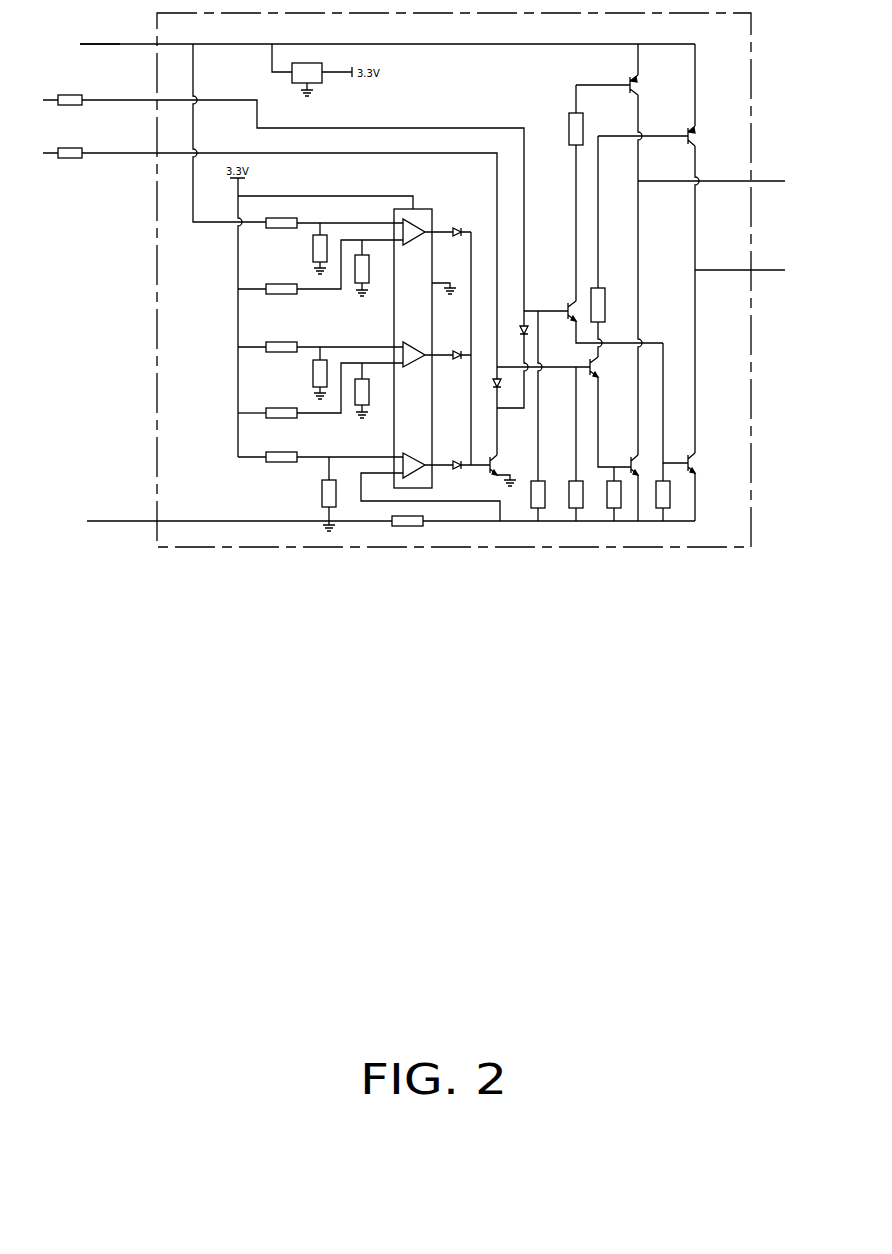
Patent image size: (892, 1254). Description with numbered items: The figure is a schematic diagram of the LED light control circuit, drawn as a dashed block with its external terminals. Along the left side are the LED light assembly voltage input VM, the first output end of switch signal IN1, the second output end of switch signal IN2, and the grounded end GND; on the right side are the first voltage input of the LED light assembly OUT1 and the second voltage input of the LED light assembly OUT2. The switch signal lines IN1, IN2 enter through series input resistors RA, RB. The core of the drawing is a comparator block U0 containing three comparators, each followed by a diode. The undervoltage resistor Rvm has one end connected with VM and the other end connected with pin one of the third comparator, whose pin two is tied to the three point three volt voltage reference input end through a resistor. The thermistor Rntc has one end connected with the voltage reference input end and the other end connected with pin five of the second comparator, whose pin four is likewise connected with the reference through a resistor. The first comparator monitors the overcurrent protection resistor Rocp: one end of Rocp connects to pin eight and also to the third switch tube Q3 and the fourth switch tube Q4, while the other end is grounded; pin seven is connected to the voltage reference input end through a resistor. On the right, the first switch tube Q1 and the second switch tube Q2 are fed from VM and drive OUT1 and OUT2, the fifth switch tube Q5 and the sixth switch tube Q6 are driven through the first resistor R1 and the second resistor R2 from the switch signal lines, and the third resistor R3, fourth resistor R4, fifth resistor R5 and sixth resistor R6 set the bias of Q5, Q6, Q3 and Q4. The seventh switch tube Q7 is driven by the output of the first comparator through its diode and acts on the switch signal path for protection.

The LED light assembly voltage input VM is at (111, 28).
The first output end of switch signal IN1 is at (285, 230).
The second output end of switch signal IN2 is at (272, 276).
The grounded end GND is at (391, 500).
The first voltage input of the LED light assembly OUT1 is at (732, 162).
The second voltage input of the LED light assembly OUT2 is at (761, 252).
The input resistor A RA is at (70, 94).
The input resistor B RB is at (70, 147).
The undervoltage resistor Rvm is at (330, 217).
The thermistor Rntc is at (267, 407).
The overcurrent protection resistor Rocp is at (407, 529).
The first resistor R1 is at (599, 193).
The second resistor R2 is at (604, 318).
The third resistor R3 is at (545, 501).
The fourth resistor R4 is at (583, 444).
The fifth resistor R5 is at (621, 494).
The sixth resistor R6 is at (669, 492).
The first switch tube Q1 is at (644, 249).
The second switch tube Q2 is at (701, 248).
The third switch tube Q3 is at (644, 488).
The fourth switch tube Q4 is at (701, 487).
The fifth switch tube Q5 is at (565, 310).
The sixth switch tube Q6 is at (604, 367).
The seventh switch tube Q7 is at (503, 466).
The comparator unit U0 is at (438, 348).